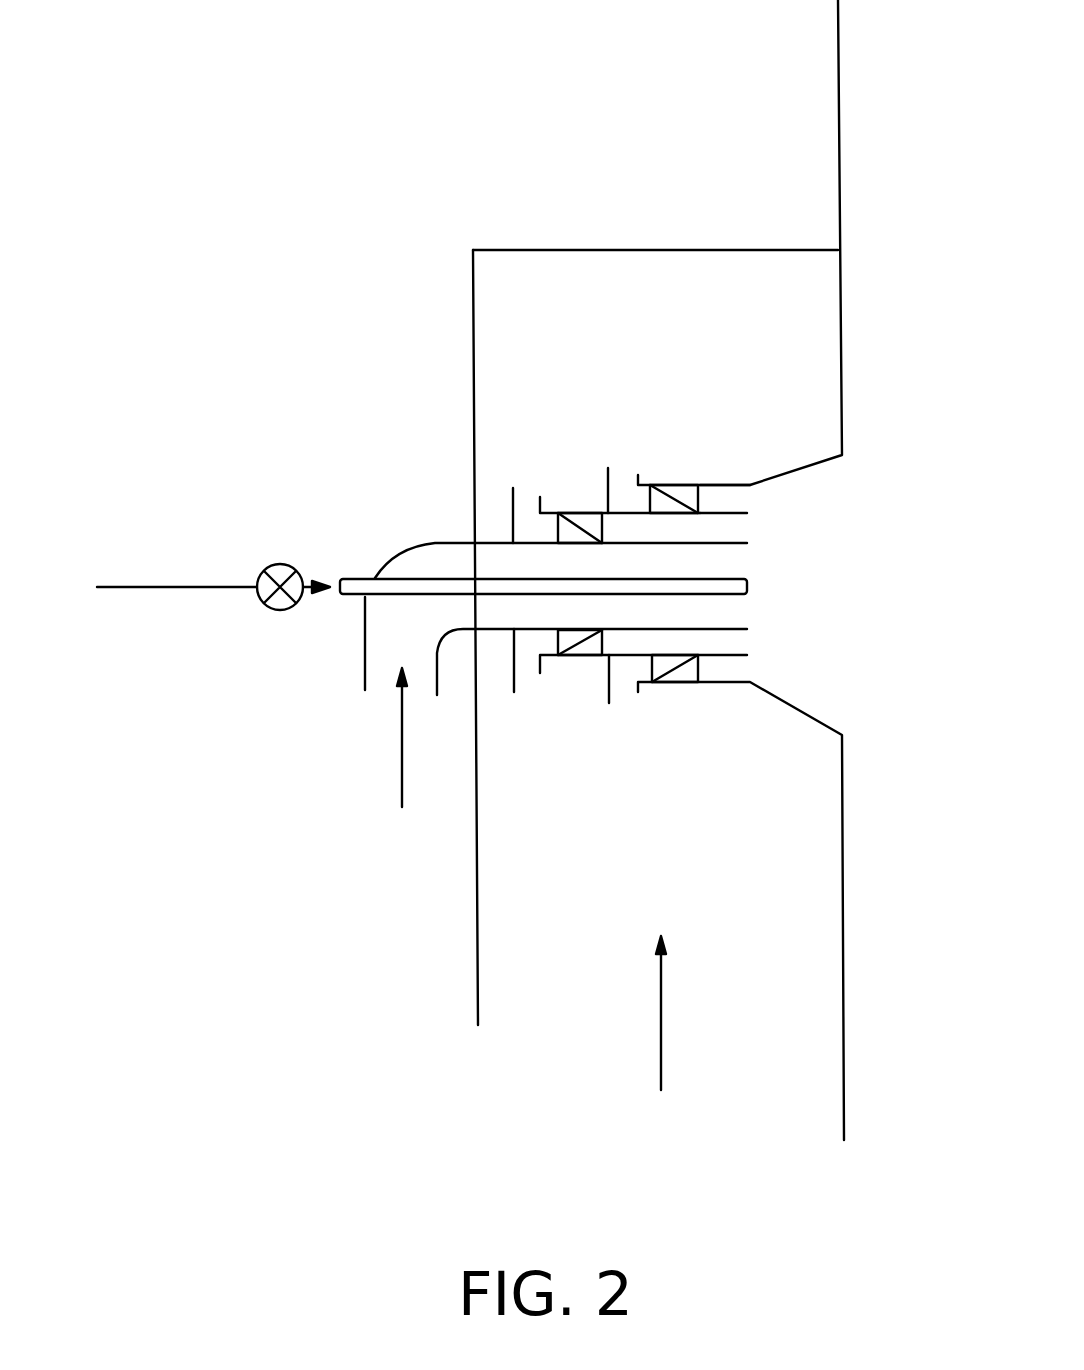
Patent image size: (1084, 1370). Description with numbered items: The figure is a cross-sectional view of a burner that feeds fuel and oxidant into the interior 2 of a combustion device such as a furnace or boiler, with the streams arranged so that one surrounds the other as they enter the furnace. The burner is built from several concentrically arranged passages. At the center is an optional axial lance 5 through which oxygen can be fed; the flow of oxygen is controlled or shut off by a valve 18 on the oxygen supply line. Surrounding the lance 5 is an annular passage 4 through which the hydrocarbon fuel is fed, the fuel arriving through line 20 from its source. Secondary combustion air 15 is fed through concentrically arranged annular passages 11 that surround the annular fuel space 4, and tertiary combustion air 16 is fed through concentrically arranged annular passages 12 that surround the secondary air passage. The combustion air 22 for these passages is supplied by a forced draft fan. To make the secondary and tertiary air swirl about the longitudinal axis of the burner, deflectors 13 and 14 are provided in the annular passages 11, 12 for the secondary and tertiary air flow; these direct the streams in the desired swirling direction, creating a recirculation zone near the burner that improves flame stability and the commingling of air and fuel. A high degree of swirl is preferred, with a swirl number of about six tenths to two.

The interior 2 is at (908, 539).
The annular passage 4 is at (473, 563).
The axial lance 5 is at (353, 577).
The annular passages 11 is at (678, 541).
The annular passages 12 is at (720, 500).
The deflector 13 is at (578, 513).
The deflector 14 is at (670, 500).
The secondary combustion air 15 is at (526, 676).
The tertiary combustion air 16 is at (623, 697).
The valve 18 is at (270, 608).
The line 20 is at (387, 768).
The combustion air 22 is at (661, 1046).